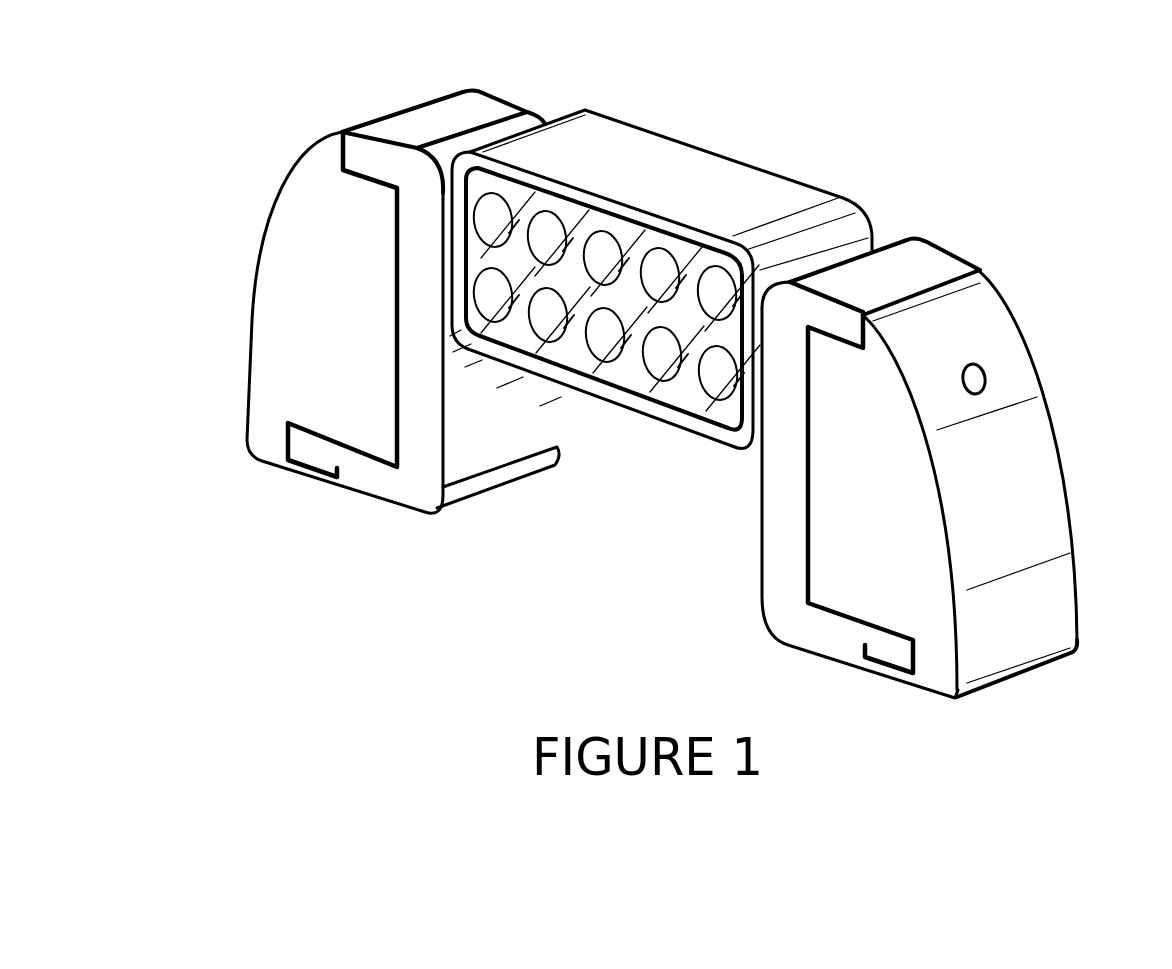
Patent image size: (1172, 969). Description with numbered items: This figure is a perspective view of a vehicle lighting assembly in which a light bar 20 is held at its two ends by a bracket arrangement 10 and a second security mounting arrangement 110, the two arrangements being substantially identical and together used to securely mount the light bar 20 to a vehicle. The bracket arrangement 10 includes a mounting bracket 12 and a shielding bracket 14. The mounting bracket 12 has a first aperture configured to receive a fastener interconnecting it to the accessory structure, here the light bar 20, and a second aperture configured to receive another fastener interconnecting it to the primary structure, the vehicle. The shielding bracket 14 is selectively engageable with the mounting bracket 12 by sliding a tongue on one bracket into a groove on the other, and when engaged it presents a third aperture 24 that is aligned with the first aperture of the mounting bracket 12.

The bracket arrangement 10 is at (1017, 215).
The mounting bracket 12 is at (775, 555).
The shielding bracket 14 is at (1067, 618).
The light bar 20 is at (755, 157).
The third aperture 24 is at (983, 370).
The second security mounting arrangement 110 is at (317, 100).